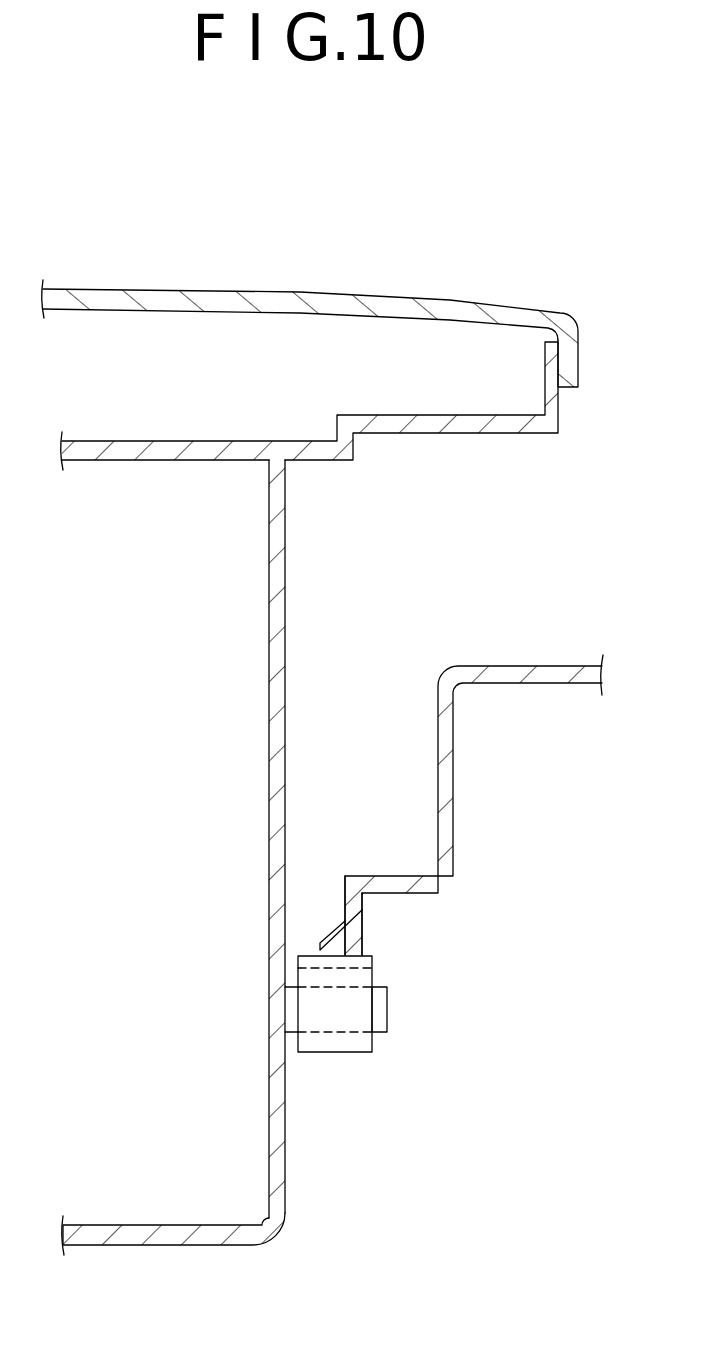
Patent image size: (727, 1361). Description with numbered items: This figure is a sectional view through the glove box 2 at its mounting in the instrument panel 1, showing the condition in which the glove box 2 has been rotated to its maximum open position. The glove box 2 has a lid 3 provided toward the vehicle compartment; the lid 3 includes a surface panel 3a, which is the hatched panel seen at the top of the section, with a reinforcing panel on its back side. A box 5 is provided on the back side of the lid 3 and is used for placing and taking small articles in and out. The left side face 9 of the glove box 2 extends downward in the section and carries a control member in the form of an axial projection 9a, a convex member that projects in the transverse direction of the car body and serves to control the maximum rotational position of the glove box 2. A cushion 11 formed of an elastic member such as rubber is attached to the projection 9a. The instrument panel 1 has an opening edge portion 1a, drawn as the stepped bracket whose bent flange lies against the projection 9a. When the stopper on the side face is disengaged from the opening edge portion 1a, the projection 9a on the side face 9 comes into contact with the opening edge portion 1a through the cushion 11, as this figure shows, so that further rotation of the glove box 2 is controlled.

The instrument panel 1 is at (536, 650).
The opening edge portion 1a is at (357, 932).
The glove box 2 is at (445, 274).
The lid 3 is at (157, 290).
The surface panel 3a is at (298, 316).
The box 5 is at (128, 1225).
The left side face 9 is at (285, 716).
The axial projection 9a is at (387, 1013).
The cushion 11 is at (346, 1015).